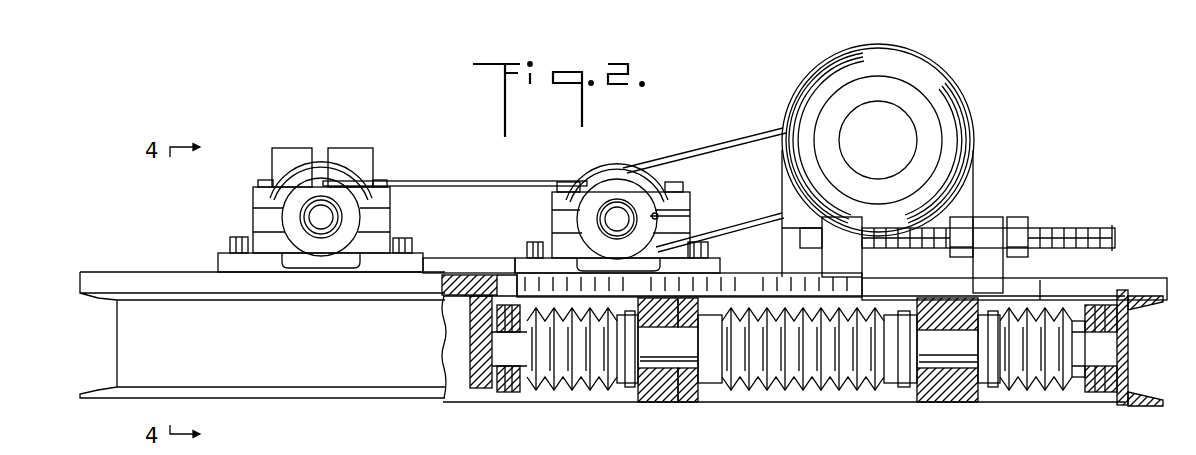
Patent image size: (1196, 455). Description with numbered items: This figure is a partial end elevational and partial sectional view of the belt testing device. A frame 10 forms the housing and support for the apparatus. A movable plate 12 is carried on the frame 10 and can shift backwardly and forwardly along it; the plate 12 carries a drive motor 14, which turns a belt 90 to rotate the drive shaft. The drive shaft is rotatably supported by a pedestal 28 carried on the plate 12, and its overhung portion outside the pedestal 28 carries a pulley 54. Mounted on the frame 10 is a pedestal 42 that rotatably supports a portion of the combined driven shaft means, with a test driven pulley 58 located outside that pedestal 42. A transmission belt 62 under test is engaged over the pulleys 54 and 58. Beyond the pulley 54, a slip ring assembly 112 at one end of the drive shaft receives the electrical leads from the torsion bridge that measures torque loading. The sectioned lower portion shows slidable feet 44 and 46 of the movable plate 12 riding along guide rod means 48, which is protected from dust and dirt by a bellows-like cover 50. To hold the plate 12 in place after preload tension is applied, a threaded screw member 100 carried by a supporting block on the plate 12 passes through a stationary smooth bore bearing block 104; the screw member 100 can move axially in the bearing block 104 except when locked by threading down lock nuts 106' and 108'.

The frame 10 is at (152, 345).
The movable plate 12 is at (741, 290).
The drive motor 14 is at (953, 103).
The pedestal 28 is at (608, 180).
The pedestal 42 is at (258, 212).
The slidable foot 44 is at (652, 404).
The slidable foot 46 is at (958, 402).
The guide rod means 48 is at (677, 404).
The bellows-like cover 50 is at (553, 392).
The pulley 54 is at (630, 193).
The pulley 58 is at (328, 180).
The transmission belt 62 is at (448, 182).
The belt 90 is at (742, 147).
The threaded screw member 100 is at (1105, 231).
The bearing block 104 is at (997, 222).
The lock nut 106' is at (989, 206).
The lock nut 108' is at (1049, 219).
The slip ring assembly 112 is at (598, 216).